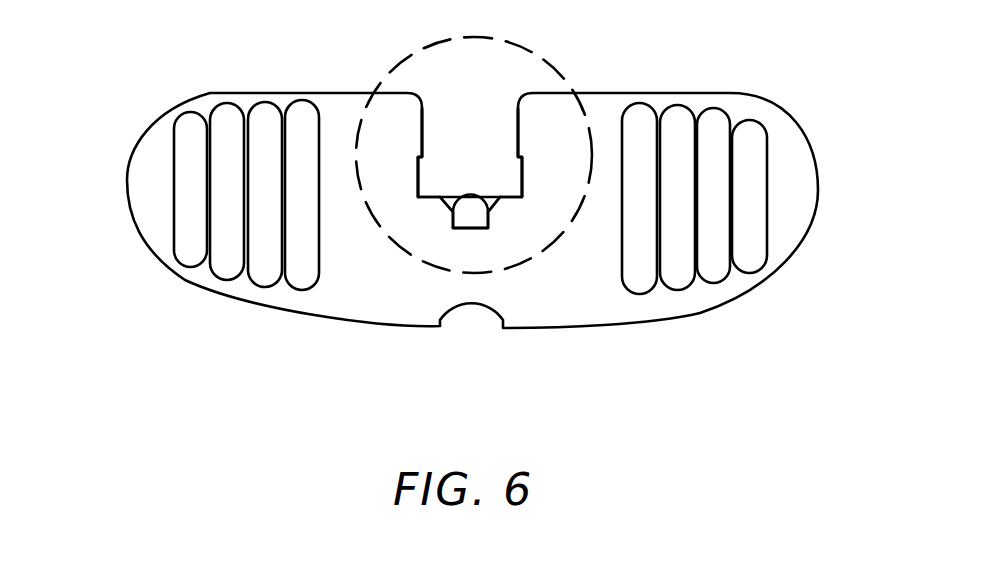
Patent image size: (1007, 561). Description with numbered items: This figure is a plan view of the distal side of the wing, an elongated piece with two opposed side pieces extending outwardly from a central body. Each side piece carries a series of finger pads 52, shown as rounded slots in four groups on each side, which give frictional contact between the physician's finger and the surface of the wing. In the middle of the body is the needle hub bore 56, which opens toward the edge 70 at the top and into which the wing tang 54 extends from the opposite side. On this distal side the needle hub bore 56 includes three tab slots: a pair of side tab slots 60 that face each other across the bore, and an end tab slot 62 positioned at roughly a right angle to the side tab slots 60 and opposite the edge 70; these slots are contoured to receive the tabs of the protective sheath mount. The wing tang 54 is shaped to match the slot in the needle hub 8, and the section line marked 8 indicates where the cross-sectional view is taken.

The needle hub 8 is at (118, 177).
The finger pads 52 is at (258, 113).
The wing tang 54 is at (465, 220).
The needle hub bore 56 is at (468, 148).
The side tab slots 60 is at (417, 187).
The end tab slot 62 is at (477, 230).
The edge 70 is at (540, 93).